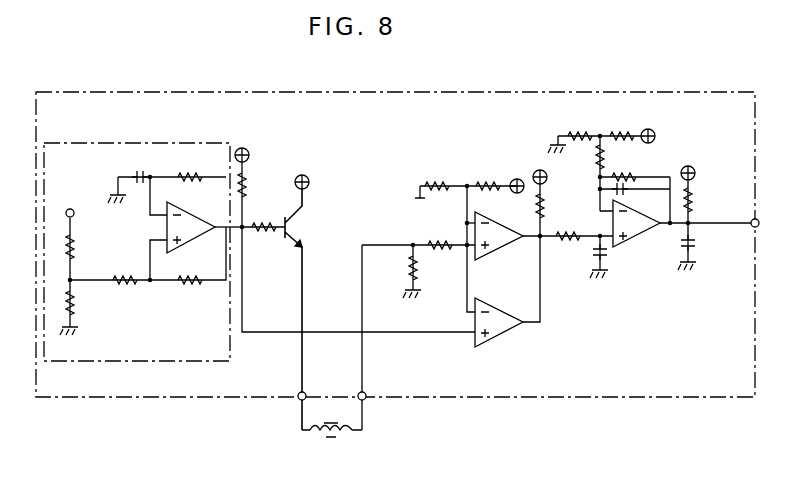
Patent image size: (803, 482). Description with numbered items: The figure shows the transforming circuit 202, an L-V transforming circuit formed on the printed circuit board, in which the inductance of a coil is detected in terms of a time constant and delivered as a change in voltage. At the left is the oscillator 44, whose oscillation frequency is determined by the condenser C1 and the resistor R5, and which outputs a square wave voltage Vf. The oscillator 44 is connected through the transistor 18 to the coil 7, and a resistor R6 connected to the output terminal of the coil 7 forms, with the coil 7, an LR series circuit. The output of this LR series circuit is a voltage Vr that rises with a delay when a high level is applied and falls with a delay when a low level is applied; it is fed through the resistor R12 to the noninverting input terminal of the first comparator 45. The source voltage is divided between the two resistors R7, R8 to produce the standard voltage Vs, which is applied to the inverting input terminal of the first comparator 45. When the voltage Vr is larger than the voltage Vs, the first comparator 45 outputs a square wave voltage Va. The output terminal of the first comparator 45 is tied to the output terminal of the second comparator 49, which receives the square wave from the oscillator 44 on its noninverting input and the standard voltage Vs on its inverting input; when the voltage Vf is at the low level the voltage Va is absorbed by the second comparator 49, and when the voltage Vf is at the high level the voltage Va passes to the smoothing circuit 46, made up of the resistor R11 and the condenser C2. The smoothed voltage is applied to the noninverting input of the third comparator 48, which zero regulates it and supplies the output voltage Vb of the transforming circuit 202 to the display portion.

The transforming circuit 202 is at (632, 92).
The oscillator 44 is at (120, 143).
The transistor 18 is at (303, 222).
The coil 7 is at (352, 434).
The first comparator 45 is at (505, 223).
The second comparator 49 is at (495, 332).
The third comparator 48 is at (637, 237).
The smoothing circuit 46 is at (599, 278).
The condenser C1 is at (137, 176).
The condenser C2 is at (606, 256).
The resistor R5 is at (190, 176).
The resistor R6 is at (411, 274).
The resistor R7 is at (495, 185).
The resistor R8 is at (434, 185).
The resistor R11 is at (575, 244).
The resistor R12 is at (449, 244).
The square wave voltage Vf is at (303, 260).
The standard voltage Vs is at (463, 202).
The voltage Vr is at (458, 260).
The square wave voltage Va is at (532, 256).
The output voltage Vb is at (704, 225).